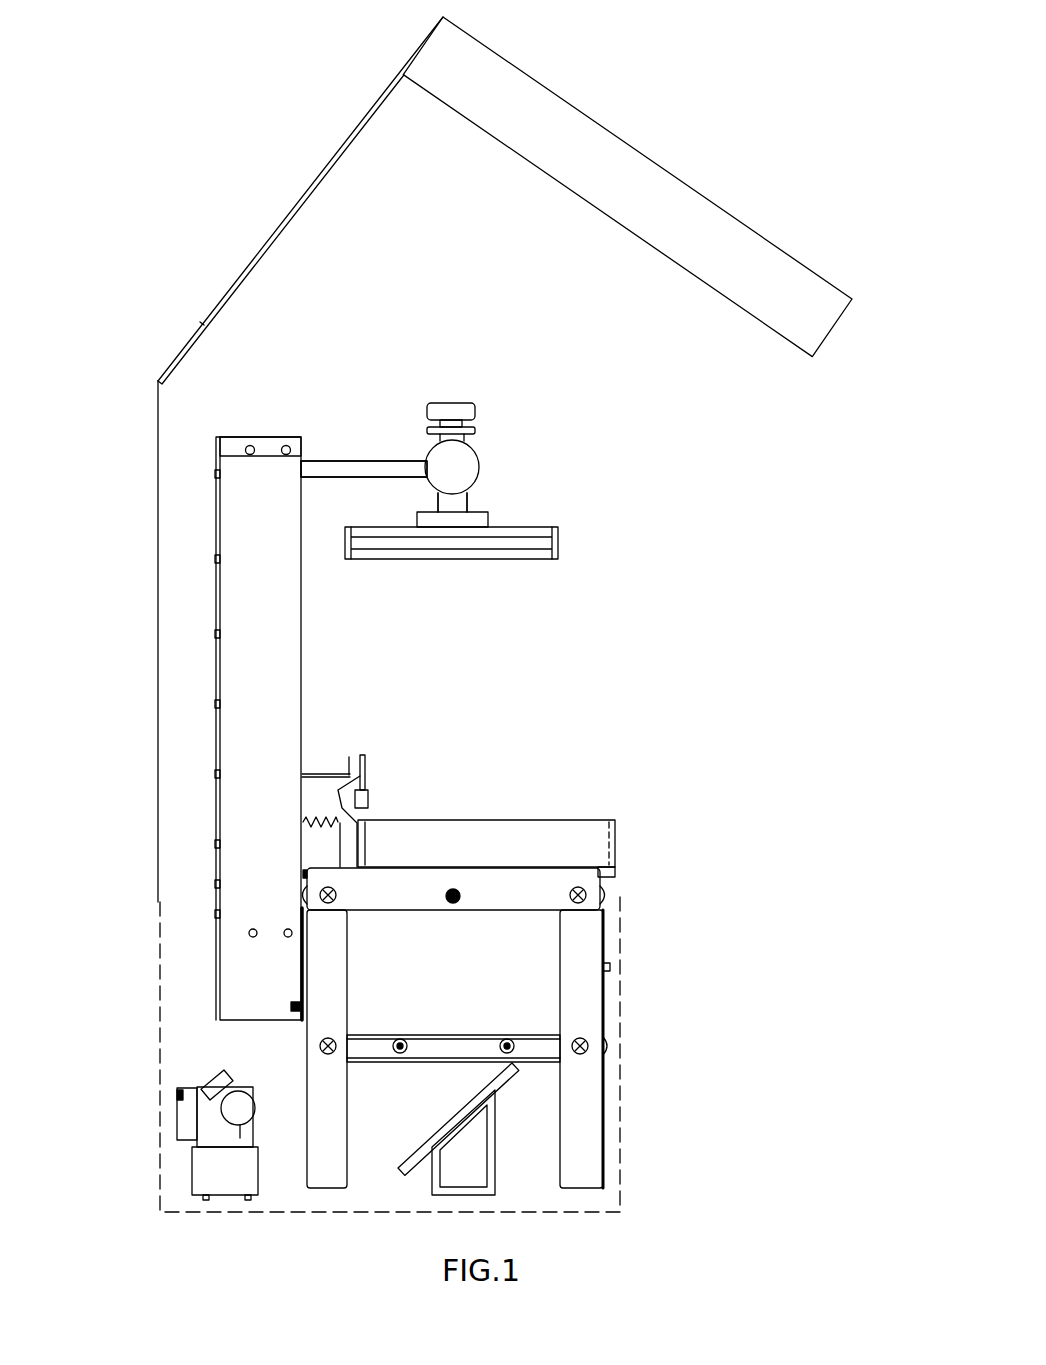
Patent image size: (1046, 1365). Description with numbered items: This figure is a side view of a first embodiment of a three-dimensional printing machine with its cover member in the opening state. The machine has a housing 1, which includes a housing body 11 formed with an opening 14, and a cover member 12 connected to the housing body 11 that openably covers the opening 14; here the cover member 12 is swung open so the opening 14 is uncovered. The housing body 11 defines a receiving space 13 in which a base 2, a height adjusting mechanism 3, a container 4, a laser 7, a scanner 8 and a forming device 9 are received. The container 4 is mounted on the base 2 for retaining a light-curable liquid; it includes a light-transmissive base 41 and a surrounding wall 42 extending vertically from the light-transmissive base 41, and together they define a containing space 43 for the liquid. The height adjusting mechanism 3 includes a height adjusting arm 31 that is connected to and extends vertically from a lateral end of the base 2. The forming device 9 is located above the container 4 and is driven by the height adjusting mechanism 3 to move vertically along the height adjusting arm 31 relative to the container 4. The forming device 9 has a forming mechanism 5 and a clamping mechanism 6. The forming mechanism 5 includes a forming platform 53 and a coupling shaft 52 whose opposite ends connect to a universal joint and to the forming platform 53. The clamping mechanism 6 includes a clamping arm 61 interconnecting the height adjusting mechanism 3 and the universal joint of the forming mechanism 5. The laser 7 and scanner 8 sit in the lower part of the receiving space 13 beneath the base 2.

The housing 1 is at (152, 458).
The housing body 11 is at (157, 590).
The cover member 12 is at (692, 188).
The receiving space 13 is at (537, 688).
The opening 14 is at (672, 580).
The base 2 is at (500, 884).
The height adjusting mechanism 3 is at (210, 518).
The height adjusting arm 31 is at (285, 617).
The container 4 is at (617, 815).
The light-transmissive base 41 is at (615, 866).
The surrounding wall 42 is at (613, 835).
The containing space 43 is at (471, 850).
The forming mechanism 5 is at (570, 524).
The coupling shaft 52 is at (460, 508).
The forming platform 53 is at (540, 527).
The clamping mechanism 6 is at (347, 452).
The clamping arm 61 is at (388, 470).
The laser 7 is at (248, 1110).
The scanner 8 is at (452, 1115).
The forming device 9 is at (517, 412).